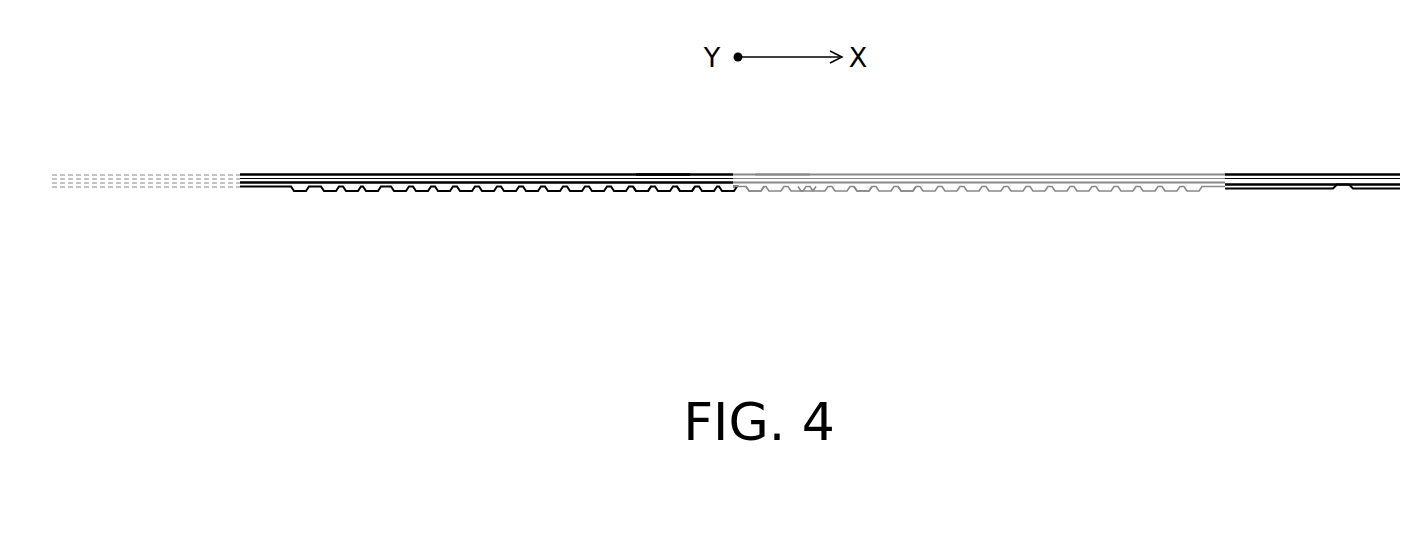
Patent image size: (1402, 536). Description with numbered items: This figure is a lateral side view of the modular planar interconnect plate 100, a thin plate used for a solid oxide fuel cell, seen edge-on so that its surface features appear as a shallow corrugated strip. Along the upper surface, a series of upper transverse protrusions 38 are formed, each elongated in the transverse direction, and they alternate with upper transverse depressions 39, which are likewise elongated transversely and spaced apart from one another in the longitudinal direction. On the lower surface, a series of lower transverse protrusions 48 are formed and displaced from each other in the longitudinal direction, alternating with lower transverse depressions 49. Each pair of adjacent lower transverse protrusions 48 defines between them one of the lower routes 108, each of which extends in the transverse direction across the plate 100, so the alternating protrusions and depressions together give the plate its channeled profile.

The modular planar interconnect plate 100 is at (1004, 136).
The upper transverse protrusions 38 is at (807, 175).
The upper transverse depressions 39 is at (642, 178).
The lower transverse protrusions 48 is at (638, 188).
The lower transverse depressions 49 is at (807, 188).
The lower routes 108 is at (899, 193).